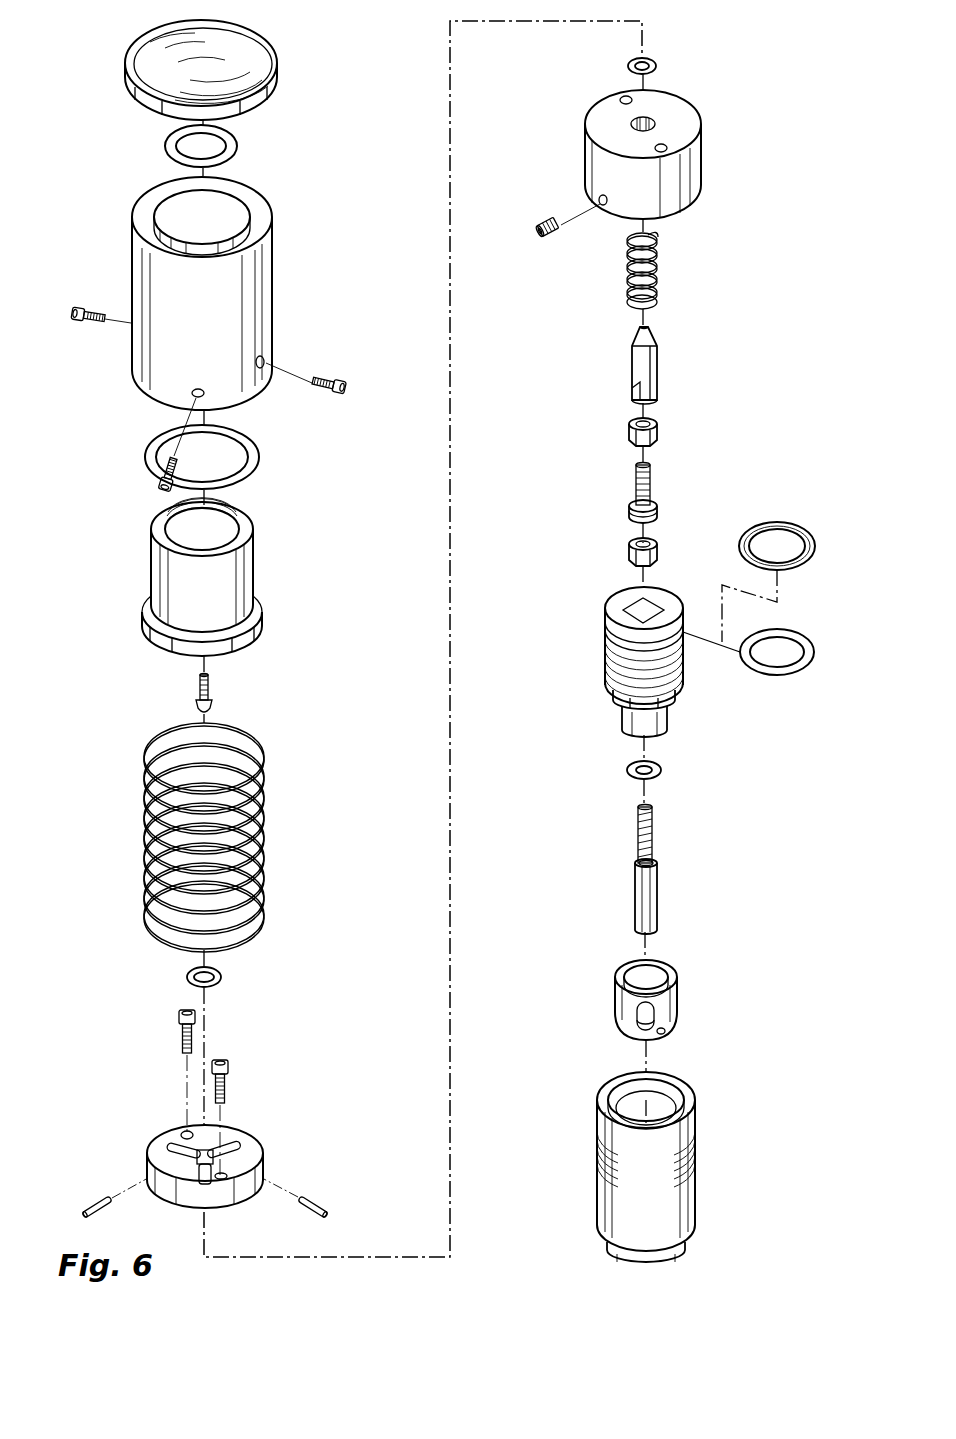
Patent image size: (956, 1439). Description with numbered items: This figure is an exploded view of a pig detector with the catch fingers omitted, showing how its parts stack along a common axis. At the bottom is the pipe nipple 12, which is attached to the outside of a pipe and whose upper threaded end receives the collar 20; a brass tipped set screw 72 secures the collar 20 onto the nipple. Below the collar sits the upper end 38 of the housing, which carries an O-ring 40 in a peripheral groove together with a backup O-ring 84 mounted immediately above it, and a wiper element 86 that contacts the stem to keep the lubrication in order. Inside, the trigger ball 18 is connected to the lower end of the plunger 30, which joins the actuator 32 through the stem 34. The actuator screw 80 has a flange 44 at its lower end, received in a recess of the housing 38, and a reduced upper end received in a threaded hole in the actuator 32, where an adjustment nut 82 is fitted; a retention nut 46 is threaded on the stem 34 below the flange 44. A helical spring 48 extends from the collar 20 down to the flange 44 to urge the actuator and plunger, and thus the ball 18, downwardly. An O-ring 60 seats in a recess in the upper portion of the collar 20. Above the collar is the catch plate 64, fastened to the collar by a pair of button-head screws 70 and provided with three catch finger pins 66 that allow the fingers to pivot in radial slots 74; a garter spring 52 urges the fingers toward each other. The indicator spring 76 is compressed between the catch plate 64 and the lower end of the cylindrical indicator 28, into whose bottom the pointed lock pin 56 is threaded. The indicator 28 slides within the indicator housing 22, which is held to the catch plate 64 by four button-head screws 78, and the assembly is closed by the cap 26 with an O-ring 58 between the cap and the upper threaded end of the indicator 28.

The pipe nipple 12 is at (686, 1178).
The ball 18 is at (676, 998).
The collar 20 is at (700, 145).
The indicator housing 22 is at (258, 270).
The cap 26 is at (258, 63).
The indicator 28 is at (246, 578).
The plunger 30 is at (656, 897).
The actuator 32 is at (655, 352).
The stem 34 is at (653, 826).
The upper end 38 is at (608, 665).
The O-ring 40 is at (797, 676).
The flange 44 is at (628, 511).
The retention nut 46 is at (628, 548).
The helical spring 48 is at (660, 262).
The garter spring 52 is at (222, 977).
The pointed lock pin 56 is at (214, 702).
The O-ring 58 is at (232, 147).
The O-ring 60 is at (658, 63).
The catch plate 64 is at (254, 1148).
The catch finger pins 66 is at (96, 1206).
The button-head screws 70 is at (226, 1058).
The set screw 72 is at (545, 222).
The radial slots 74 is at (176, 1148).
The indicator spring 76 is at (262, 802).
The button-head screws 78 is at (86, 306).
The actuator screw 80 is at (652, 478).
The adjustment nut 82 is at (658, 425).
The backup O-ring 84 is at (786, 525).
The wiper element 86 is at (660, 767).